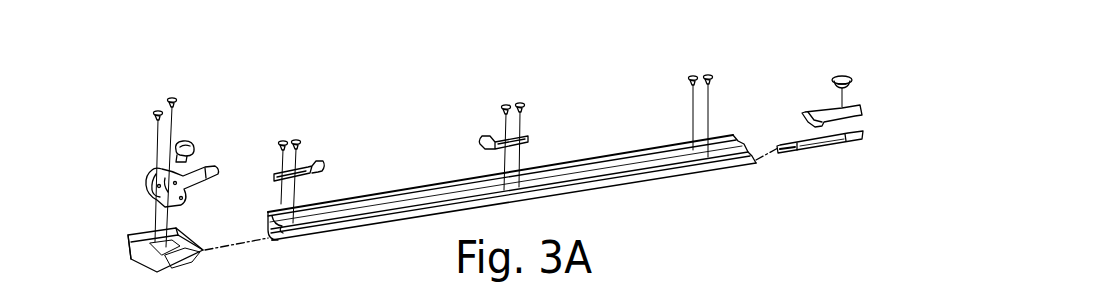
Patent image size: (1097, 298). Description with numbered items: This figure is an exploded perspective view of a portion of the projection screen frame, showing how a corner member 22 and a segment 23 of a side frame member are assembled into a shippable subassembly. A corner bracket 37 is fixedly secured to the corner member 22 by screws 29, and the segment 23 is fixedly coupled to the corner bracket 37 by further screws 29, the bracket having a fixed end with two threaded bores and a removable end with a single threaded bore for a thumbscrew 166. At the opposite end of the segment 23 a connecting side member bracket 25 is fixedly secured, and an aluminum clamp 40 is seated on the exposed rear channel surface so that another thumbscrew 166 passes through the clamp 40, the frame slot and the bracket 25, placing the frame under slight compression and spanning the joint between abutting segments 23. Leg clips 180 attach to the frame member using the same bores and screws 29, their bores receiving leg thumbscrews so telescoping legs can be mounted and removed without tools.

The corner member 22 is at (122, 255).
The segment 23 is at (393, 189).
The connecting side member bracket 25 is at (812, 155).
The screws 29 is at (182, 95).
The corner bracket 37 is at (132, 192).
The clamp 40 is at (793, 108).
The thumbscrew 166 is at (198, 143).
The leg clip 180 is at (334, 162).